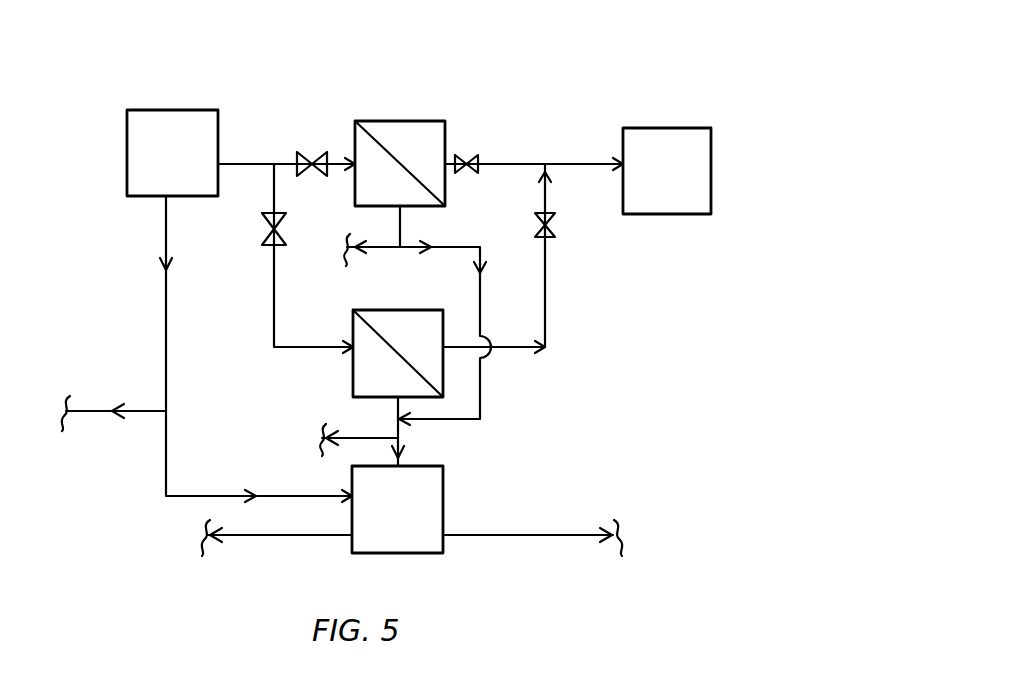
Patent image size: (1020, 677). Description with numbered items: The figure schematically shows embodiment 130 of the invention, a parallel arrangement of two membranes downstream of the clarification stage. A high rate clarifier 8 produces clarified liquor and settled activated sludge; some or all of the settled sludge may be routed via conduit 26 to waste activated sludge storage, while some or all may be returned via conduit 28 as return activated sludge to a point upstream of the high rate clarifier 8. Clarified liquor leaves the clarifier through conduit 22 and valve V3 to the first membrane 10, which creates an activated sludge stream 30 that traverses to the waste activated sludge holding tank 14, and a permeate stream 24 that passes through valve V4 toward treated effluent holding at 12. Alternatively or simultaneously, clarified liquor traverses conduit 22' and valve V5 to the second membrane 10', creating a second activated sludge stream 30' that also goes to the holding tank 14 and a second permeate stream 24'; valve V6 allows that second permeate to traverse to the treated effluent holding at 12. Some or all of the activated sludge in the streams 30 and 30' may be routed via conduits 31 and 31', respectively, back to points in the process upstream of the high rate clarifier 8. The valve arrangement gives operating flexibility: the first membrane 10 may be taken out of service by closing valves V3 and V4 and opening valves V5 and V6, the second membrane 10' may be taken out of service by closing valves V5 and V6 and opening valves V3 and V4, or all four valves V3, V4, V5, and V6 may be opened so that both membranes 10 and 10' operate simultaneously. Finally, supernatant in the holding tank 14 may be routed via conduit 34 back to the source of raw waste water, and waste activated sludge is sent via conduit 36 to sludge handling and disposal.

The embodiment 130 is at (768, 44).
The high rate clarifier 8 is at (165, 109).
The membrane 10 is at (400, 138).
The second membrane 10' is at (398, 336).
The treated effluent holding 12 is at (660, 127).
The waste activated sludge holding tank 14 is at (446, 500).
The conduit 22 is at (286, 140).
The conduit 22' is at (313, 258).
The permeate stream 24 is at (534, 142).
The second permeate stream 24' is at (522, 258).
The conduit 26 is at (168, 354).
The conduit 28 is at (82, 406).
The activated sludge stream 30 is at (444, 319).
The second activated sludge stream 30' is at (443, 431).
The conduit 31 is at (372, 236).
The conduit 31' is at (359, 431).
The conduit 34 is at (280, 538).
The conduit 36 is at (512, 537).
The valve V3 is at (312, 150).
The valve V4 is at (462, 154).
The valve V5 is at (264, 236).
The valve V6 is at (553, 224).